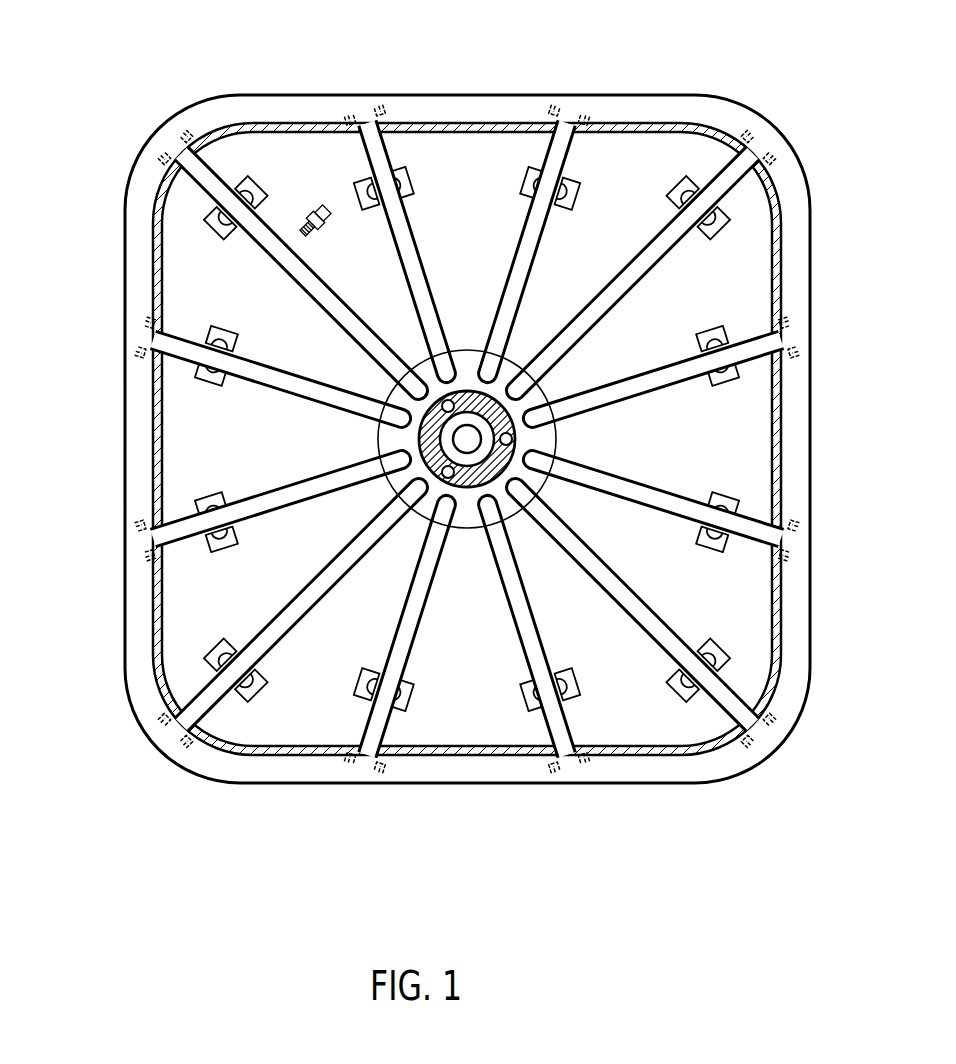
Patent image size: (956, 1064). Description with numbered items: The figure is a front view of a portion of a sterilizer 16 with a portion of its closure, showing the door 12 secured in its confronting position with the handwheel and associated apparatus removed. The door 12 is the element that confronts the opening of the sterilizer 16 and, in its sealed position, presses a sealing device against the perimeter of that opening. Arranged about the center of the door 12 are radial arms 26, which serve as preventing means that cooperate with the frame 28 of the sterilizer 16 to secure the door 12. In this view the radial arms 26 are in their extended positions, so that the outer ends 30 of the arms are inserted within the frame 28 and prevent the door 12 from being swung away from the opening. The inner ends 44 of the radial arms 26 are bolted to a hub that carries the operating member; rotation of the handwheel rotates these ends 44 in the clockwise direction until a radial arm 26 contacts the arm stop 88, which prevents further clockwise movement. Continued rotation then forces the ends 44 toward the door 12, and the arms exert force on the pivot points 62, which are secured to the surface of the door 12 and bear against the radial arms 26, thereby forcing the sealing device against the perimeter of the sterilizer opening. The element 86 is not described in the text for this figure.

The door 12 is at (467, 391).
The sterilizer 16 is at (310, 98).
The radial arms 26 is at (408, 273).
The frame 28 is at (590, 122).
The ends of radial arms 30 is at (440, 93).
The ends of radial arms 44 is at (489, 366).
The pivot points 62 is at (221, 236).
The diagonal spoke arm 86 is at (284, 262).
The arm stop 88 is at (322, 210).